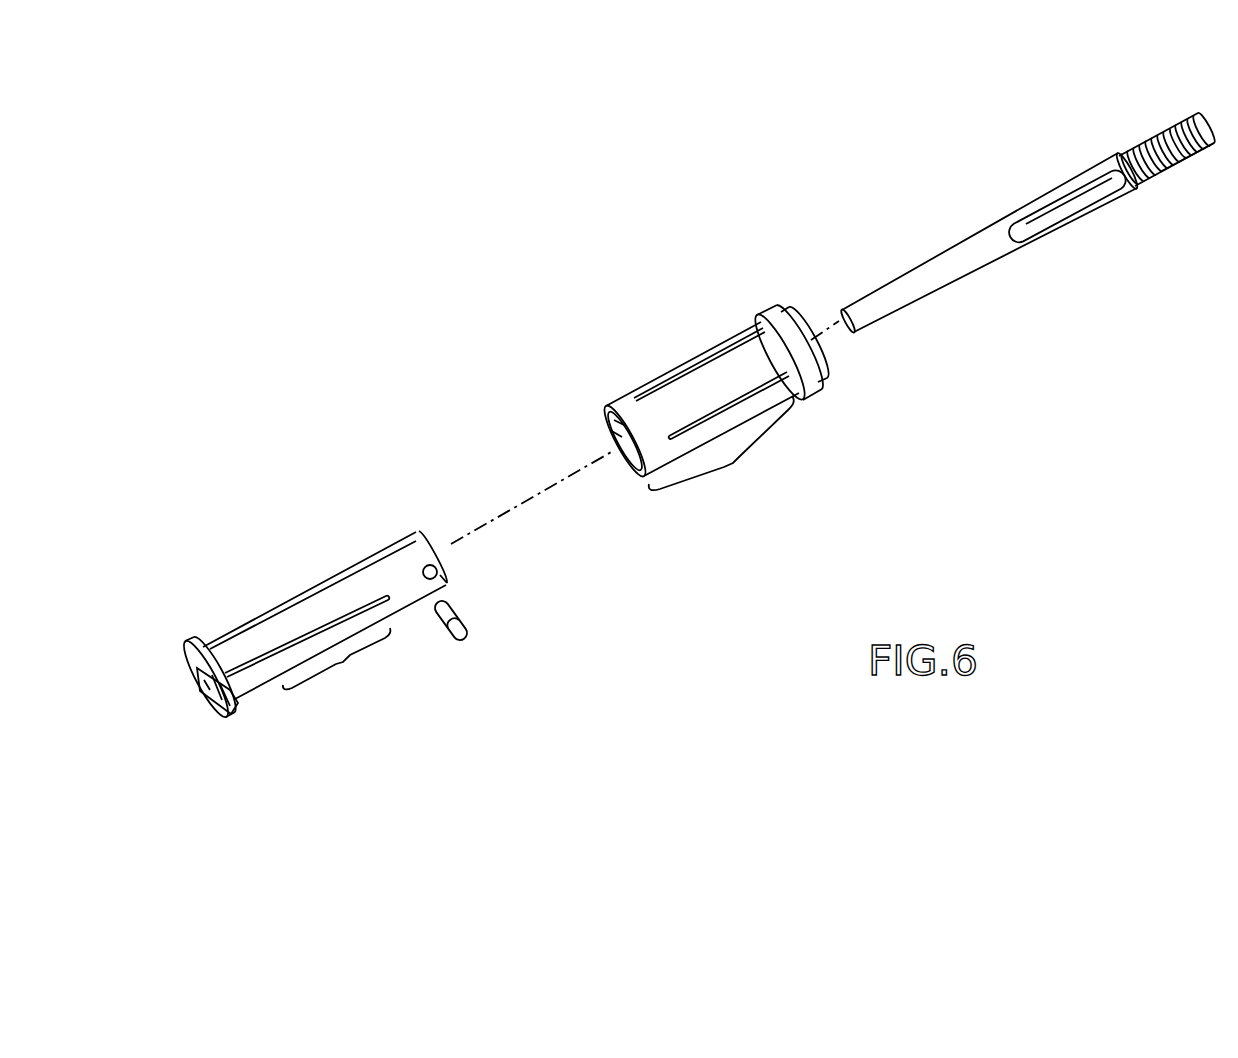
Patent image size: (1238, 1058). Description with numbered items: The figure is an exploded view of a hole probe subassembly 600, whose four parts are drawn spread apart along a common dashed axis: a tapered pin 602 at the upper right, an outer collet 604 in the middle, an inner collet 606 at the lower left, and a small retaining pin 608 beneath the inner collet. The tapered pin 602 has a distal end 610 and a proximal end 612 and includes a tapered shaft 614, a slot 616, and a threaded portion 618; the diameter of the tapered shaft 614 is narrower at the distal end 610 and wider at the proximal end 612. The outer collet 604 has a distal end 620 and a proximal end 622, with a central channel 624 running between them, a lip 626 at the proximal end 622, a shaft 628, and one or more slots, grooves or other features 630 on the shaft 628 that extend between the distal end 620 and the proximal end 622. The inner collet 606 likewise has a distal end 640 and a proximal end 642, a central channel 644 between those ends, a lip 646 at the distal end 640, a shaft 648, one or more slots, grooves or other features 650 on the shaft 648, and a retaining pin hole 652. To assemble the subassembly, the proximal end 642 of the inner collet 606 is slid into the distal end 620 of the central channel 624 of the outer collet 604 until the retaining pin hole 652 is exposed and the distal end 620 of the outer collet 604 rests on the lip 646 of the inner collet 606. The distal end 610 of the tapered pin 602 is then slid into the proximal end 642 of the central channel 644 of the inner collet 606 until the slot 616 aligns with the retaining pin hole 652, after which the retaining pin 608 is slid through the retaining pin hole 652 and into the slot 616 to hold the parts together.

The hole probe subassembly 600 is at (247, 502).
The tapered pin 602 is at (968, 243).
The outer collet 604 is at (657, 373).
The inner collet 606 is at (262, 623).
The retaining pin 608 is at (457, 637).
The distal end 610 is at (833, 323).
The proximal end 612 is at (1207, 123).
The tapered shaft 614 is at (980, 257).
The slot 616 is at (1068, 203).
The threaded portion 618 is at (1182, 163).
The distal end 620 is at (627, 477).
The proximal end 622 is at (823, 377).
The central channel 624 is at (613, 432).
The lip 626 is at (787, 307).
The shaft 628 is at (721, 450).
The slots, grooves or other features 630 is at (637, 413).
The distal end 640 is at (227, 717).
The proximal end 642 is at (452, 582).
The central channel 644 is at (193, 700).
The lip 646 is at (233, 703).
The shaft 648 is at (337, 661).
The slots, grooves or other features 650 is at (332, 597).
The retaining pin hole 652 is at (440, 570).